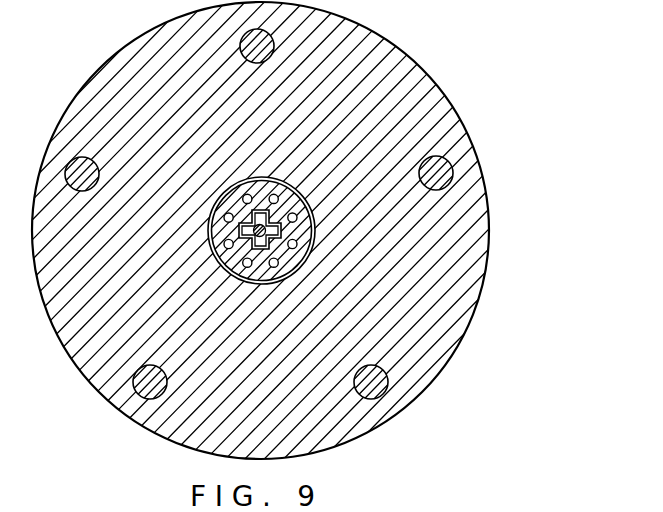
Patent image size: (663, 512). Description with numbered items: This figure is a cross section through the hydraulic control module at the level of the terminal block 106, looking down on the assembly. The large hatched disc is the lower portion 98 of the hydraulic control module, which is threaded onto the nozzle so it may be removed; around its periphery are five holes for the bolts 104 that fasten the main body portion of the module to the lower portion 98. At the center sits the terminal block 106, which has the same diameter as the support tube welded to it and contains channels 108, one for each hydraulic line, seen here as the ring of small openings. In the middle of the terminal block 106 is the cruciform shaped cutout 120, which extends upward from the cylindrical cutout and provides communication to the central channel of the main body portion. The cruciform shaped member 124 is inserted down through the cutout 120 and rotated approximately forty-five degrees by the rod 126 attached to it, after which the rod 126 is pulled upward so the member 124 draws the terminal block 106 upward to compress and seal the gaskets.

The lower portion of the hydraulic control module 98 is at (475, 247).
The bolts 104 is at (451, 177).
The terminal block 106 is at (224, 266).
The channels 108 is at (292, 276).
The cruciform shaped cutout 120 is at (285, 184).
The cruciform shaped member 124 is at (308, 208).
The rod 126 is at (315, 240).